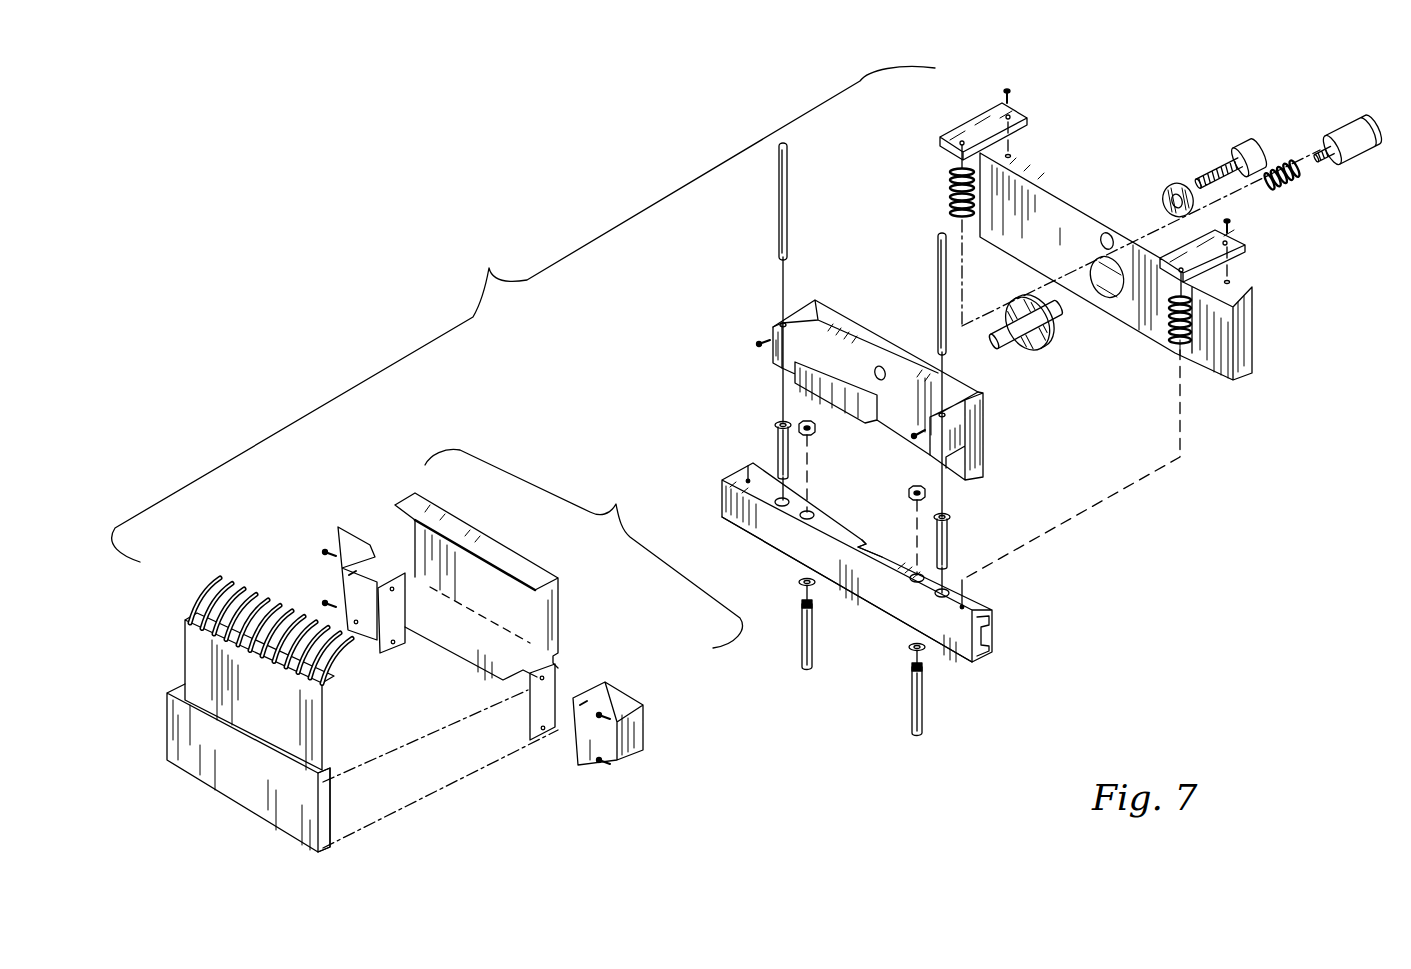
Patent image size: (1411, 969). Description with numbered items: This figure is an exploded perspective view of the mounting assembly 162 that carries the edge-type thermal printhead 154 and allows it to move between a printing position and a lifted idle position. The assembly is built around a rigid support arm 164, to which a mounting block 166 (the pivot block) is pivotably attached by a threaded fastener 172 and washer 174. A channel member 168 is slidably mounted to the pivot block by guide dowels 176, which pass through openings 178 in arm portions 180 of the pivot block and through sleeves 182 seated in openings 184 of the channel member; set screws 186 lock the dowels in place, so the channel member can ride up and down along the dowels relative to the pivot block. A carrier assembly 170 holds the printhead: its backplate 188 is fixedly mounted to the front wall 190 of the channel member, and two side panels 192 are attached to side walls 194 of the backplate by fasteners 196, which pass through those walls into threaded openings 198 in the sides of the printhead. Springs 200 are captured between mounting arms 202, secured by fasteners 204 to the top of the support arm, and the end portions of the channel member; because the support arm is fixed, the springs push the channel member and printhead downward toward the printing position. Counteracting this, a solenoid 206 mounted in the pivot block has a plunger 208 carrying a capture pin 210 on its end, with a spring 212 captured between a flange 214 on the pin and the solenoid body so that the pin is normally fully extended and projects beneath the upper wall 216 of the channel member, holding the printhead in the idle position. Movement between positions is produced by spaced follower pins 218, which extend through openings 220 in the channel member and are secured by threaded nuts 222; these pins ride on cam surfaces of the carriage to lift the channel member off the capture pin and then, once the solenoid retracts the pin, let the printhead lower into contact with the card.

The thermal printhead 154 is at (262, 775).
The mounting assembly 162 is at (430, 262).
The support arm 164 is at (1243, 323).
The mounting block 166 is at (830, 312).
The channel member 168 is at (722, 483).
The carrier assembly 170 is at (590, 455).
The threaded fastener 172 is at (1245, 142).
The washer 174 is at (1172, 184).
The dowels 176 is at (779, 165).
The openings 178 is at (773, 322).
The arm portions 180 is at (772, 362).
The sleeves 182 is at (772, 450).
The openings 184 is at (772, 503).
The set screws 186 is at (756, 344).
The backplate 188 is at (441, 518).
The front wall 190 is at (865, 582).
The side panels 192 is at (357, 547).
The side walls 194 is at (398, 572).
The fasteners 196 is at (325, 603).
The threaded openings 198 is at (327, 788).
The springs 200 is at (950, 192).
The mounting arms 202 is at (940, 136).
The fasteners 204 is at (1012, 93).
The solenoid 206 is at (1352, 127).
The plunger 208 is at (1317, 150).
The capture pin 210 is at (1015, 348).
The spring 212 is at (1284, 190).
The flange 214 is at (1050, 322).
The upper wall 216 is at (832, 540).
The follower pins 218 is at (802, 617).
The openings 220 is at (810, 514).
The threaded nuts 222 is at (813, 437).